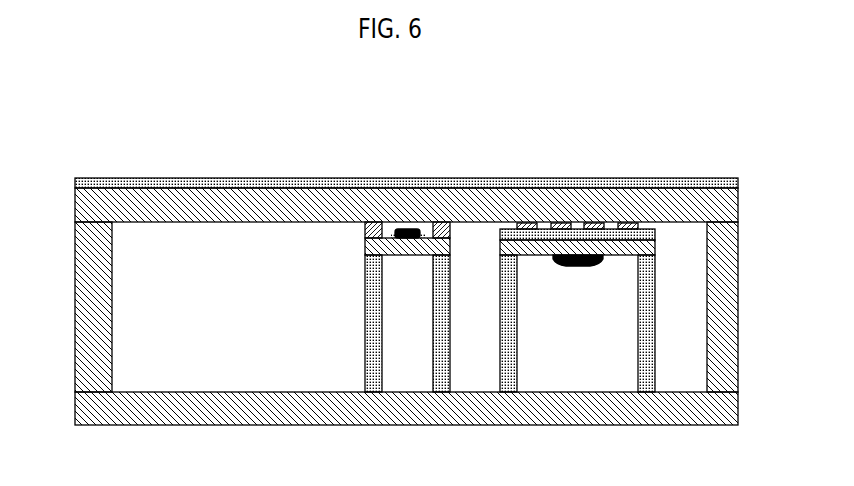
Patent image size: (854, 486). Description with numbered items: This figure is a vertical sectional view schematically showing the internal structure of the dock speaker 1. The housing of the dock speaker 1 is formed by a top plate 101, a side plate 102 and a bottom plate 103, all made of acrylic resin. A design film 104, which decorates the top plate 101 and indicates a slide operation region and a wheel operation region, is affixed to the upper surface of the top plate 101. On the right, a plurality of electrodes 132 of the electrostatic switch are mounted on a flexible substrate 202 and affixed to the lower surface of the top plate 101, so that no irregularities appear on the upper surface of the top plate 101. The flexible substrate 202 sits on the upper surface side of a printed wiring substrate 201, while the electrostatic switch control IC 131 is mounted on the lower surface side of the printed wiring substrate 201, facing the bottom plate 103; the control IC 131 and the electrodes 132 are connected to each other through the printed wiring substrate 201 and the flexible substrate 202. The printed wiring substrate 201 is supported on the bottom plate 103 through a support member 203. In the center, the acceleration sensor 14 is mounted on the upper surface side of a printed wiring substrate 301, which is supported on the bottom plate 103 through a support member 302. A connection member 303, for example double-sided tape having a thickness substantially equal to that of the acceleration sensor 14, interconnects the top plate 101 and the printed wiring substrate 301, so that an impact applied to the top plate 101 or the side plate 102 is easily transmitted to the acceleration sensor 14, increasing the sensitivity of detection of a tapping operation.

The dock speaker 1 is at (74, 90).
The acceleration sensor 14 is at (409, 228).
The top plate 101 is at (75, 206).
The side plate 102 is at (76, 311).
The bottom plate 103 is at (76, 410).
The design film 104 is at (75, 184).
The electrostatic switch control IC 131 is at (576, 267).
The electrodes 132 is at (575, 222).
The printed wiring substrate 201 is at (655, 250).
The flexible substrate 202 is at (655, 234).
The support member 203 is at (655, 322).
The printed wiring substrate 301 is at (450, 246).
The support member 302 is at (450, 322).
The connection member 303 is at (365, 230).